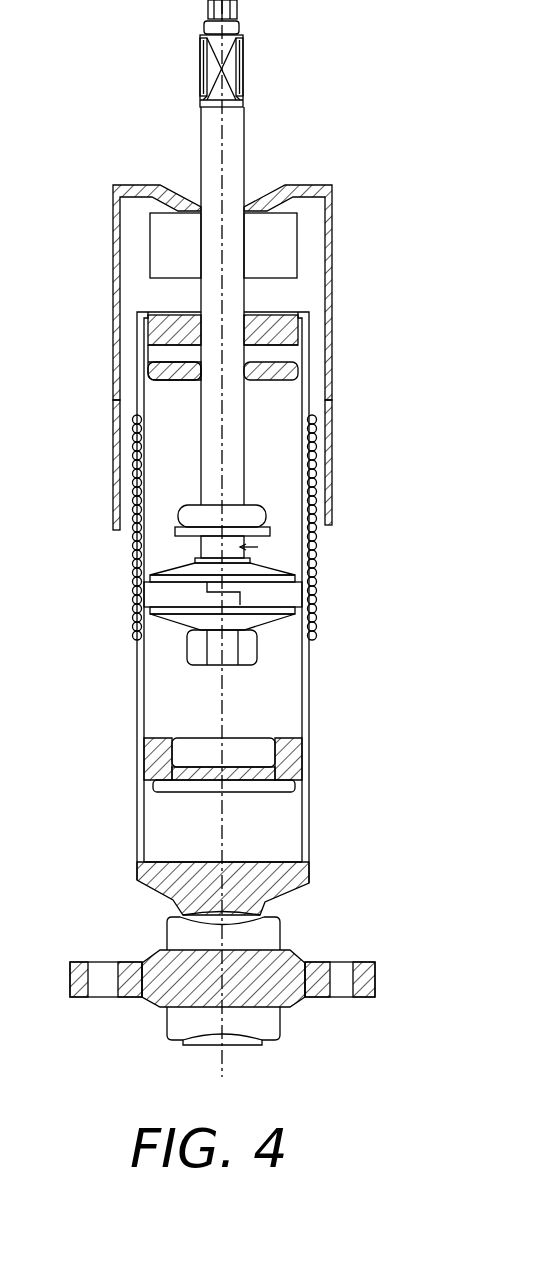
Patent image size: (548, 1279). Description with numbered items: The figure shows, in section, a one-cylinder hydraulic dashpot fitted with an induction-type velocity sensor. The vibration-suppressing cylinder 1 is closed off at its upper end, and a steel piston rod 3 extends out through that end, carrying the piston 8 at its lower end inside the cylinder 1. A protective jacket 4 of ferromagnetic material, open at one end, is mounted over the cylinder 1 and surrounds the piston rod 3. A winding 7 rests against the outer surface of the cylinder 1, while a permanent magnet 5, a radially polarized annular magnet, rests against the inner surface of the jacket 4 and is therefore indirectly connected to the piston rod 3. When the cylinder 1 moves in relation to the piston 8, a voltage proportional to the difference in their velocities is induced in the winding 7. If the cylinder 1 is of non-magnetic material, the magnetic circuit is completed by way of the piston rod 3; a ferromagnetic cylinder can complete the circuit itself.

The vibration-suppressing cylinder 1 is at (308, 848).
The piston rod 3 is at (235, 443).
The protective jacket 4 is at (332, 262).
The permanent magnet 5 is at (333, 520).
The winding 7 is at (315, 477).
The piston 8 is at (158, 594).